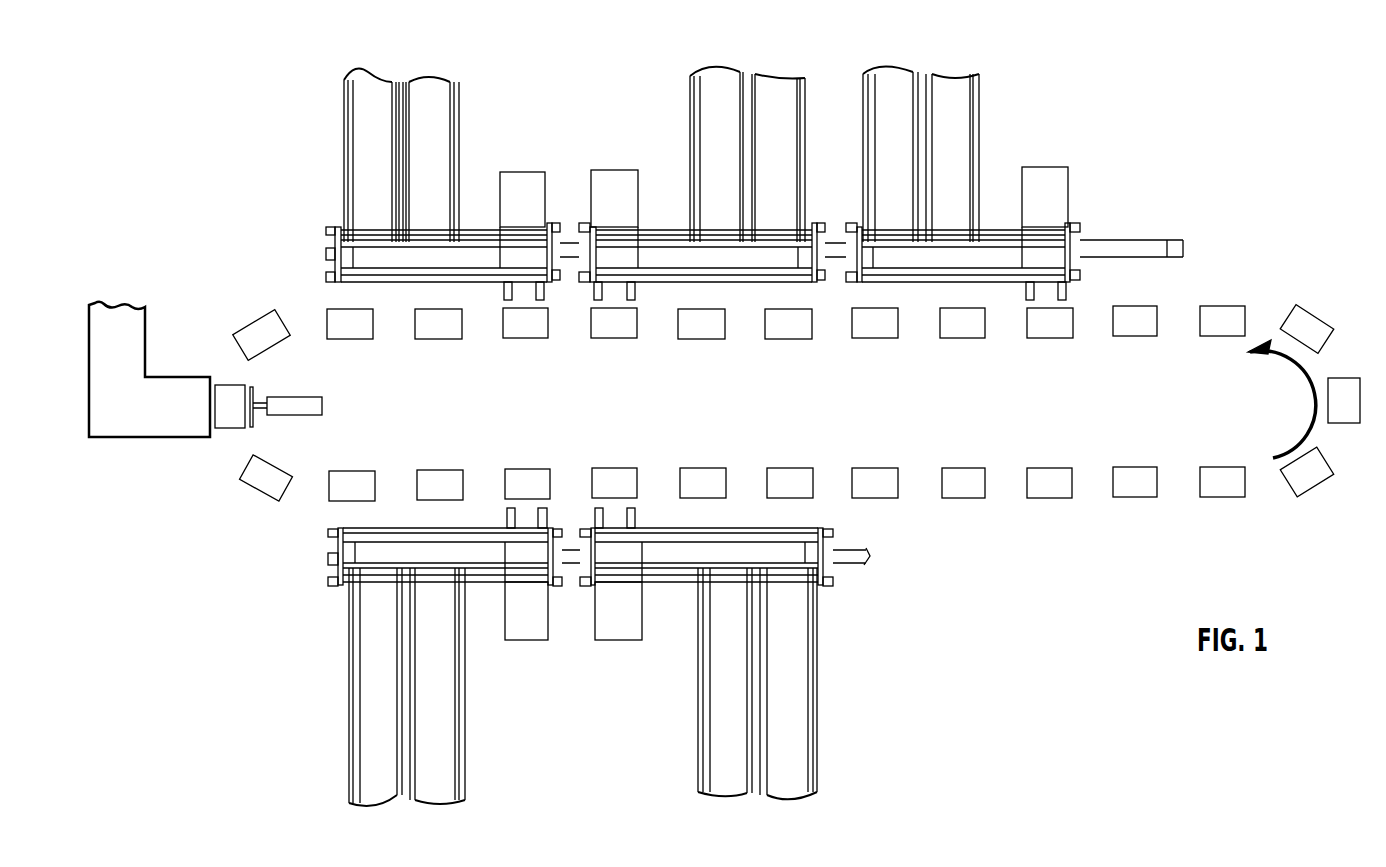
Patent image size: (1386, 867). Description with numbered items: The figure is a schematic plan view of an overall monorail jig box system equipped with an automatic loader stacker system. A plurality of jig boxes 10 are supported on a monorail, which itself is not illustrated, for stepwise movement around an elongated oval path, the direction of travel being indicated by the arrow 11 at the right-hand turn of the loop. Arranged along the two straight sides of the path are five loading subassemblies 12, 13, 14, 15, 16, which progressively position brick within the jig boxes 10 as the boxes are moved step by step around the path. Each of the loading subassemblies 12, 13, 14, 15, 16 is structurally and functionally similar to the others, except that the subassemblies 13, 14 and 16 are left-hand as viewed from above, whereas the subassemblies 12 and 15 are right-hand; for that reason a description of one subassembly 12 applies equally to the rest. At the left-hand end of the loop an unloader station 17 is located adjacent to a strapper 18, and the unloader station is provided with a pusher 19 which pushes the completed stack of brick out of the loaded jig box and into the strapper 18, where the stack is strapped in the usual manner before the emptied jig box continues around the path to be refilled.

The jig boxes 10 is at (603, 338).
The arrow 11 is at (1305, 383).
The loading subassembly 12 is at (478, 590).
The loading subassembly 13 is at (677, 583).
The loading subassembly 14 is at (992, 219).
The loading subassembly 15 is at (662, 202).
The loading subassembly 16 is at (476, 202).
The unloader station 17 is at (257, 373).
The strapper 18 is at (186, 373).
The pusher 19 is at (298, 397).